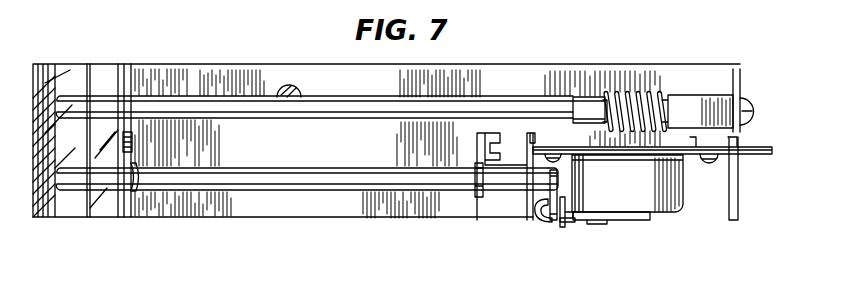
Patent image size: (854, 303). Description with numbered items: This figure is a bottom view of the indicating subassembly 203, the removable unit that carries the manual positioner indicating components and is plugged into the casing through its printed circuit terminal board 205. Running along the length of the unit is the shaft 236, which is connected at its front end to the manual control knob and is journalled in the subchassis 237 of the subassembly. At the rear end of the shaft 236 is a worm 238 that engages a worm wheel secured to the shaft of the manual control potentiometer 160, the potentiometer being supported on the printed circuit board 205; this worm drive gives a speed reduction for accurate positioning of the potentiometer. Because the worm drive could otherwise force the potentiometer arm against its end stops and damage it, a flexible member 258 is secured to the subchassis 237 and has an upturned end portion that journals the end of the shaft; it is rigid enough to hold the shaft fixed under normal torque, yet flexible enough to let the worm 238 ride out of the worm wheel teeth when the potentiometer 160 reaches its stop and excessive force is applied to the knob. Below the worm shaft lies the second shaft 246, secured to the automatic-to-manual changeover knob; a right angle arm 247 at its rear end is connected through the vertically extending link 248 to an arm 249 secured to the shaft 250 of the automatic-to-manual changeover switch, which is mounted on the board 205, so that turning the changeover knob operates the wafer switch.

The indicating subassembly 203 is at (84, 220).
The shaft 236 is at (190, 103).
The subchassis 237 is at (307, 74).
The worm 238 is at (636, 92).
The flexible member 258 is at (715, 100).
The shaft 246 is at (220, 183).
The printed circuit terminal board 205 is at (652, 165).
The manual control potentiometer 160 is at (671, 215).
The shaft 250 is at (603, 223).
The arm 249 is at (577, 221).
The link 248 is at (560, 224).
The right angle arm 247 is at (540, 213).